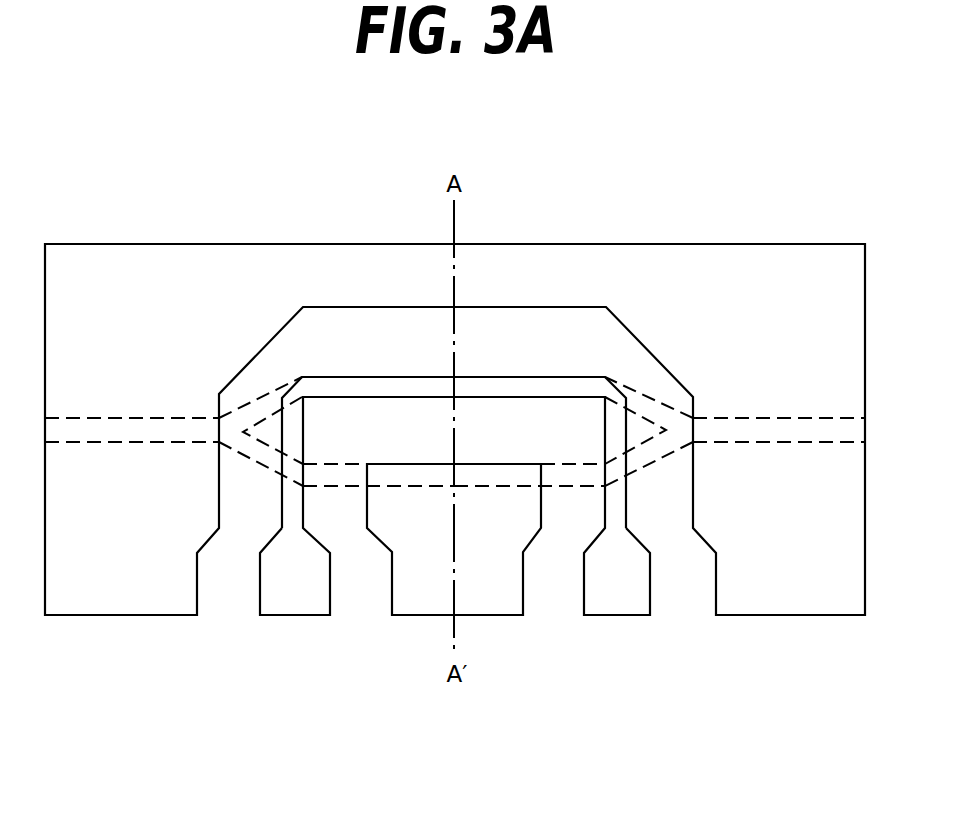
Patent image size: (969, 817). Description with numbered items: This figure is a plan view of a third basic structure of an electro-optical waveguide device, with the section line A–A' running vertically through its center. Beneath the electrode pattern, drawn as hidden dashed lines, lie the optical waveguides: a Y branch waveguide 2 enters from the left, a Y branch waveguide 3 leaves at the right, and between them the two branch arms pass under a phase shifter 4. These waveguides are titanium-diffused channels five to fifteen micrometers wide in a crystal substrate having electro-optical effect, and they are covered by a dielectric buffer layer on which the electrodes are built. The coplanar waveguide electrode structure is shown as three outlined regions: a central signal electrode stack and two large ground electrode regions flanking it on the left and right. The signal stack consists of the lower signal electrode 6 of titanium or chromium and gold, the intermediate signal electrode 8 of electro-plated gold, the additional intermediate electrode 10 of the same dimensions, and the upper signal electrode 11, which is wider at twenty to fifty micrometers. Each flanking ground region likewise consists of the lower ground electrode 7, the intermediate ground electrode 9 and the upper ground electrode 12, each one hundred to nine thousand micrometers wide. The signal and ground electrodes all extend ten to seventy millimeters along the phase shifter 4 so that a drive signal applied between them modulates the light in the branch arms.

The Y branch waveguide 2 is at (126, 413).
The Y branch waveguide 3 is at (777, 417).
The phase shifter 4 is at (380, 377).
The lower signal electrode 6 is at (452, 537).
The lower ground electrode 7 is at (455, 461).
The intermediate signal electrode 8 is at (452, 537).
The intermediate ground electrode 9 is at (455, 461).
The additional intermediate electrode 10 is at (452, 537).
The upper signal electrode 11 is at (302, 617).
The upper ground electrode 12 is at (123, 615).